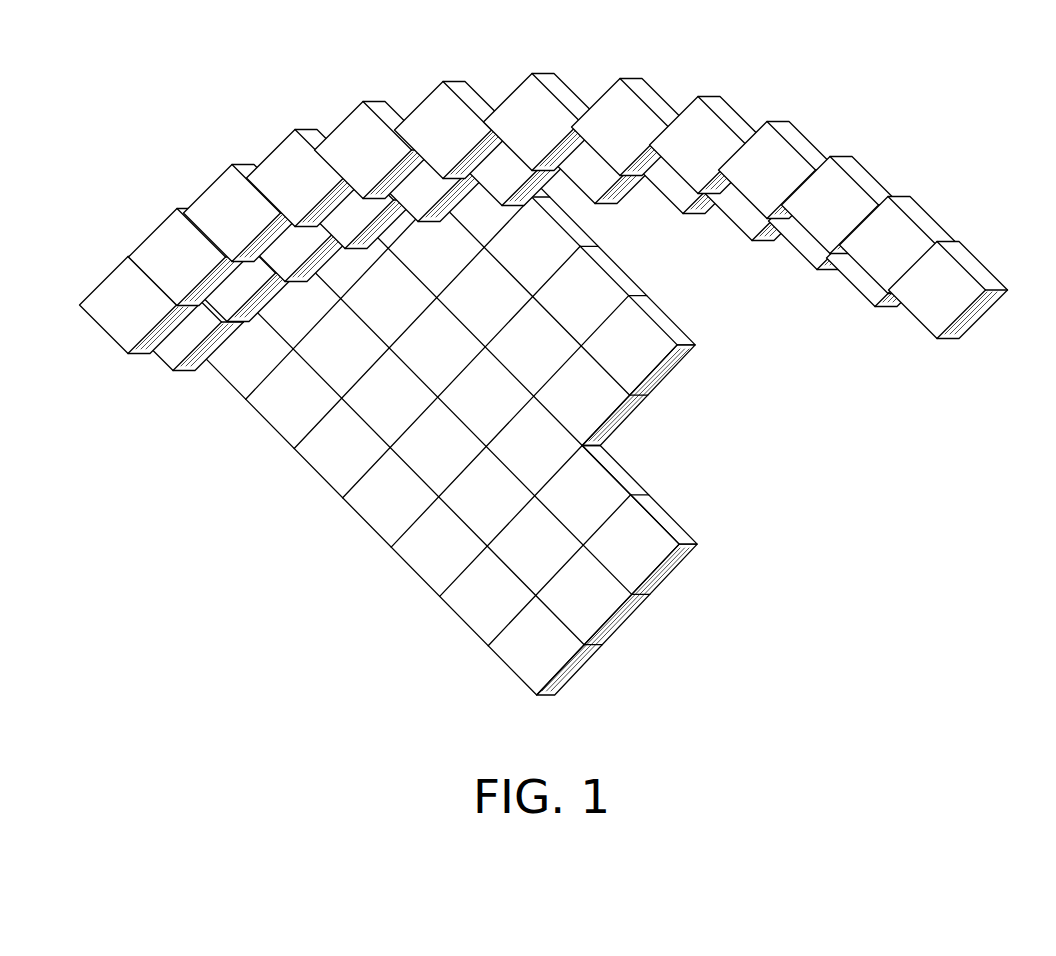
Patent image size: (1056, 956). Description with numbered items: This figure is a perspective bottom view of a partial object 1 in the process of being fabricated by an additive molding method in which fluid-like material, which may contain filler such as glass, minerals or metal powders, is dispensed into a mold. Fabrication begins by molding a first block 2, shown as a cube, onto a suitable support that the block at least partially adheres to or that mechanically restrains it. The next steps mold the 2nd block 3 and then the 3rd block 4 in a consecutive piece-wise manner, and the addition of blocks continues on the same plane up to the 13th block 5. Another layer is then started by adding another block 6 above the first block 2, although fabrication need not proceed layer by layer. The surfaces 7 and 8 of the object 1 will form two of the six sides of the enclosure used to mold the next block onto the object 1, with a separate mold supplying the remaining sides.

The partial object 1 is at (310, 477).
The first block 2 is at (113, 298).
The 2nd block 3 is at (167, 258).
The 3rd block 4 is at (230, 208).
The 13th block 5 is at (945, 280).
The another block 6 is at (178, 345).
The surface 7 is at (618, 412).
The surface 8 is at (617, 467).